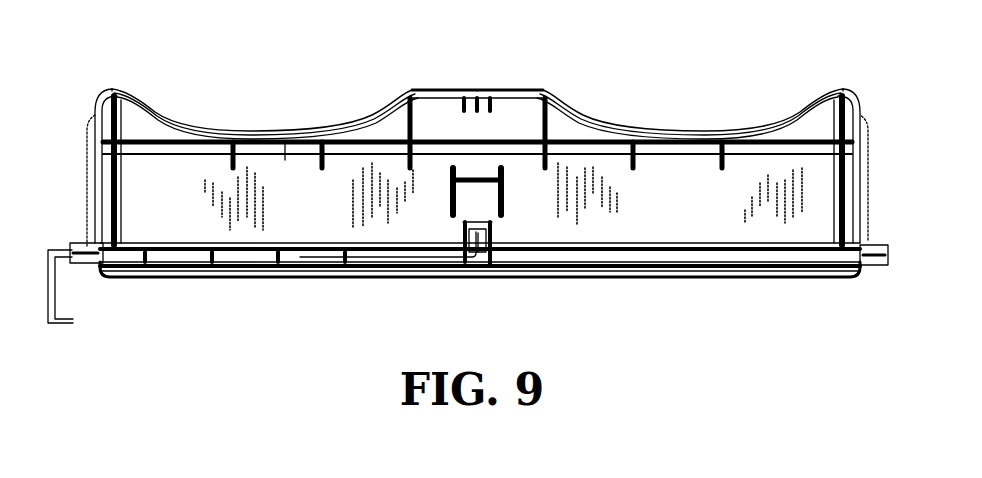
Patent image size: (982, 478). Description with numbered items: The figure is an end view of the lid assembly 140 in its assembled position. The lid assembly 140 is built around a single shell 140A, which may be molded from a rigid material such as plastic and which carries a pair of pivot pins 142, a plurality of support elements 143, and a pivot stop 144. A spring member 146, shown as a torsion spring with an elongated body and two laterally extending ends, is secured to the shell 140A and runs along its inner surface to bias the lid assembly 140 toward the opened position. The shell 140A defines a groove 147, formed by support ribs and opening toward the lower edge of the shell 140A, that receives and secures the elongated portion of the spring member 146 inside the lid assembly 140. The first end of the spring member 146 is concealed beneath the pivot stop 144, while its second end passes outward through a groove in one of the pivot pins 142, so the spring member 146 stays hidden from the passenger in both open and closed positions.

The lid assembly 140 is at (520, 90).
The shell 140A is at (281, 130).
The pivot pins 142 is at (80, 243).
The support elements 143 is at (112, 84).
The pivot stop 144 is at (493, 230).
The spring member 146 is at (58, 293).
The groove 147 is at (145, 278).